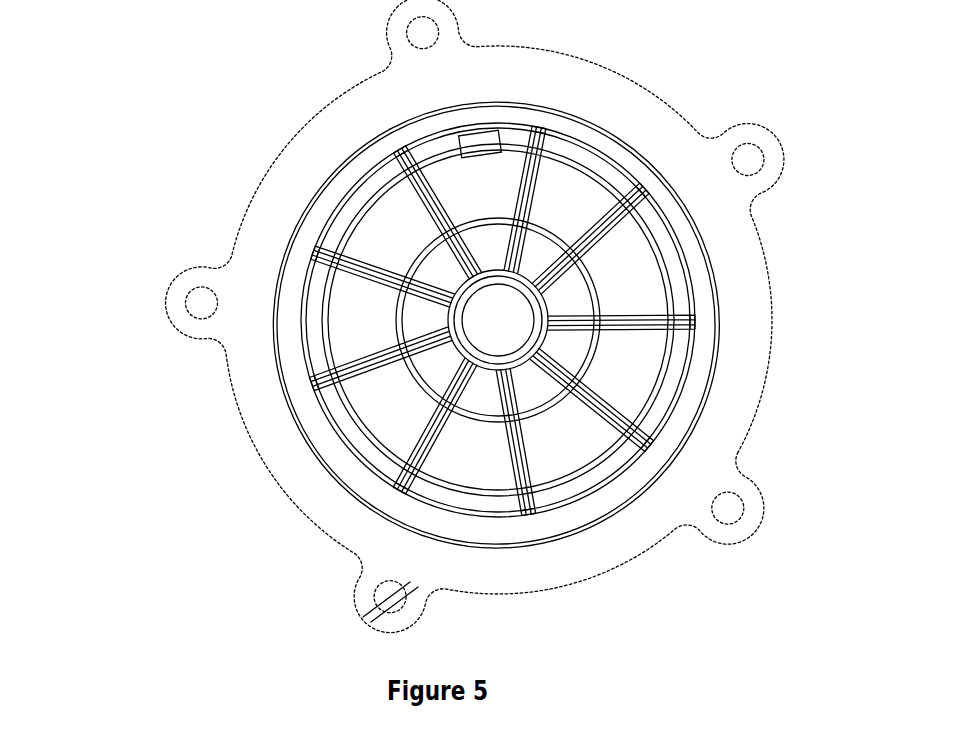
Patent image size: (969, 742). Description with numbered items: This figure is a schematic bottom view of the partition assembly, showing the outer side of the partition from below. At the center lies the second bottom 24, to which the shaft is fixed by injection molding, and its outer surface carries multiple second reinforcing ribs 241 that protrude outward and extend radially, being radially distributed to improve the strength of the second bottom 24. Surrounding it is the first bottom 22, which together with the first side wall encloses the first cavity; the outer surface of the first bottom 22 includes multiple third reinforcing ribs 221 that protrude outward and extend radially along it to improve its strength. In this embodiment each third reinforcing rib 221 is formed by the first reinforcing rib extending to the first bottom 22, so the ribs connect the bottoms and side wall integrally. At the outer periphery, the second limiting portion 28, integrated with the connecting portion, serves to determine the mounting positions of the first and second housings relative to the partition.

The first bottom 22 is at (623, 257).
The third reinforcing ribs 221 is at (645, 320).
The second bottom 24 is at (572, 297).
The second reinforcing ribs 241 is at (573, 328).
The second limiting portion 28 is at (378, 613).